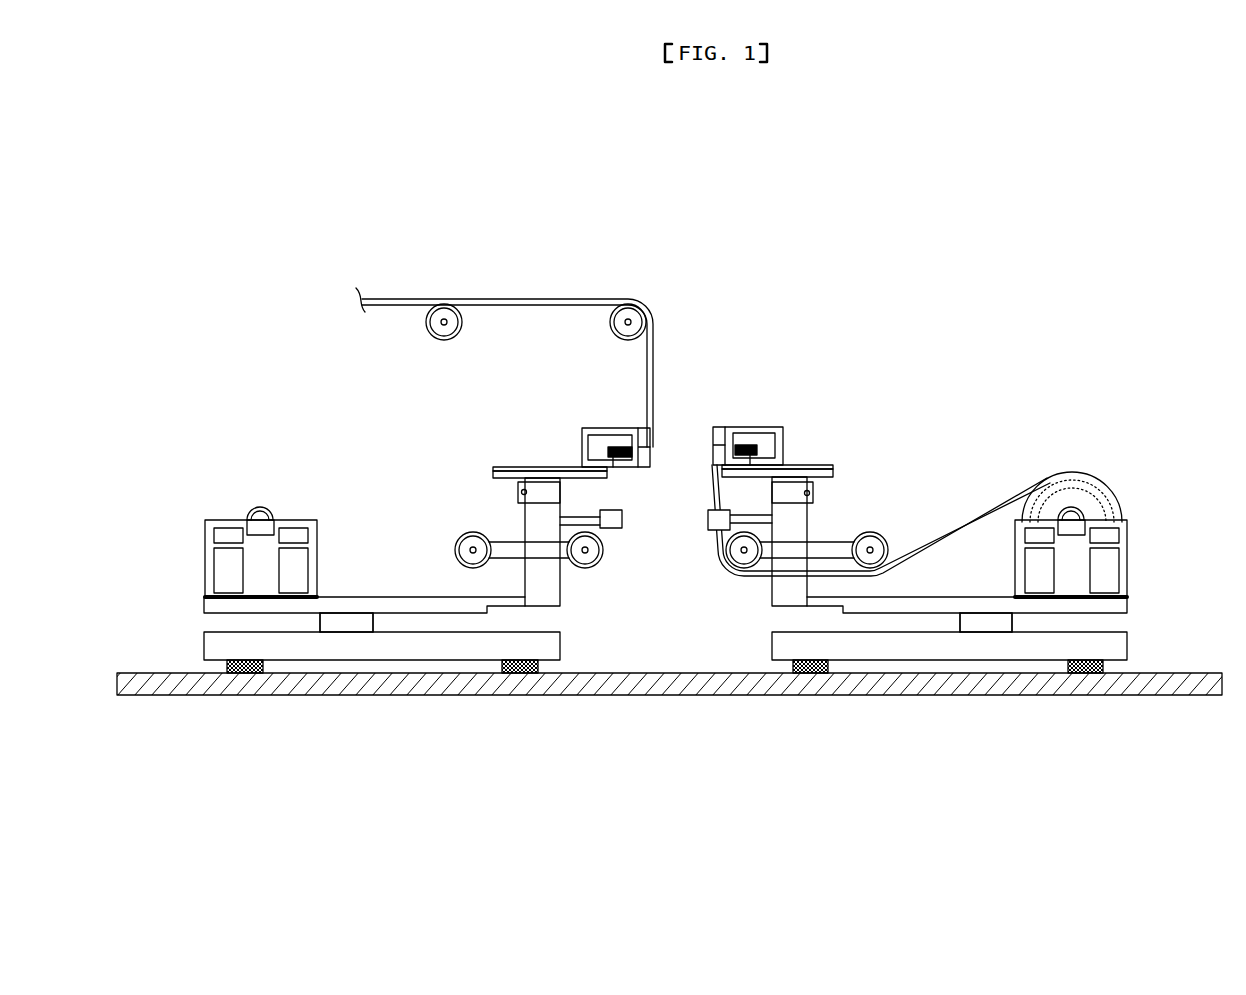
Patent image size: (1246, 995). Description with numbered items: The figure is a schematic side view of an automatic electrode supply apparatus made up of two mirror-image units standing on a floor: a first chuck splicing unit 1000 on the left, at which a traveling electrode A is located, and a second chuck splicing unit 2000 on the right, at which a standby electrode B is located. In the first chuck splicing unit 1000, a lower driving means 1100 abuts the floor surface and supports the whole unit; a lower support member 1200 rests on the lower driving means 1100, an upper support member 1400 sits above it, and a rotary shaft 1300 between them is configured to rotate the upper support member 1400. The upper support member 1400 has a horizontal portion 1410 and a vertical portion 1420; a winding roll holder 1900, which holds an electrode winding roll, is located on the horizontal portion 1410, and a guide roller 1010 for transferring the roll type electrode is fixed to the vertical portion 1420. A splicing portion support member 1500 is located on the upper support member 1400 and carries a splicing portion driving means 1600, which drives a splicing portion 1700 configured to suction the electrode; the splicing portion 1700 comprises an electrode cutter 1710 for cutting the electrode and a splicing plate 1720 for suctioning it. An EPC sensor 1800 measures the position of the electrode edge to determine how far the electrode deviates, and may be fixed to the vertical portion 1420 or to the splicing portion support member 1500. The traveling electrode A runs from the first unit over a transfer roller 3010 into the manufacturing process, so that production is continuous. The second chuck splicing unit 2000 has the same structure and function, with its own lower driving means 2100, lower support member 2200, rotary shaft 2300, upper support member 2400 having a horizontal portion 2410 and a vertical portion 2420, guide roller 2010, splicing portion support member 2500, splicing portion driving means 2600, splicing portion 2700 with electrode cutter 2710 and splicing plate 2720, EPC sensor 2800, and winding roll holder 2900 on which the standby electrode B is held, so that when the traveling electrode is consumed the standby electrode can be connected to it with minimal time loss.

The first chuck splicing unit 1000 is at (351, 776).
The guide roller 1010 is at (465, 570).
The lower driving means 1100 is at (515, 673).
The lower support member 1200 is at (212, 647).
The rotary shaft 1300 is at (327, 623).
The upper support member 1400 is at (265, 402).
The horizontal portion 1410 is at (373, 602).
The vertical portion 1420 is at (535, 528).
The splicing portion support member 1500 is at (493, 477).
The splicing portion driving means 1600 is at (493, 468).
The splicing portion 1700 is at (537, 396).
The electrode cutter 1710 is at (607, 433).
The splicing plate 1720 is at (643, 428).
The EPC sensor 1800 is at (607, 528).
The winding roll holder 1900 is at (250, 577).
The transfer roller 3010 is at (627, 306).
The traveling electrode A is at (539, 277).
The standby electrode B is at (1080, 492).
The second chuck splicing unit 2000 is at (929, 776).
The guide roller 2010 is at (868, 570).
The lower driving means 2100 is at (803, 673).
The lower support member 2200 is at (1127, 647).
The rotary shaft 2300 is at (1012, 625).
The upper support member 2400 is at (977, 403).
The horizontal portion 2410 is at (963, 602).
The vertical portion 2420 is at (807, 527).
The splicing portion support member 2500 is at (833, 477).
The splicing portion driving means 2600 is at (833, 468).
The splicing portion 2700 is at (805, 406).
The electrode cutter 2710 is at (750, 445).
The splicing plate 2720 is at (699, 406).
The EPC sensor 2800 is at (720, 530).
The winding roll holder 2900 is at (1087, 577).